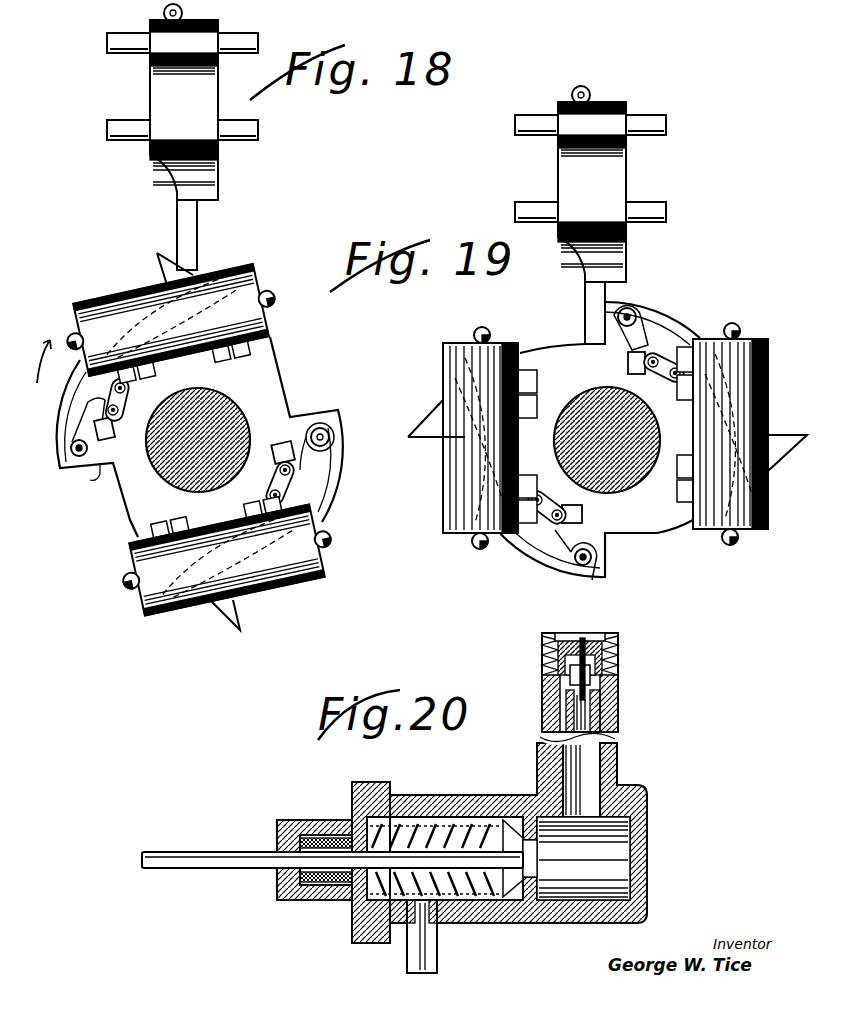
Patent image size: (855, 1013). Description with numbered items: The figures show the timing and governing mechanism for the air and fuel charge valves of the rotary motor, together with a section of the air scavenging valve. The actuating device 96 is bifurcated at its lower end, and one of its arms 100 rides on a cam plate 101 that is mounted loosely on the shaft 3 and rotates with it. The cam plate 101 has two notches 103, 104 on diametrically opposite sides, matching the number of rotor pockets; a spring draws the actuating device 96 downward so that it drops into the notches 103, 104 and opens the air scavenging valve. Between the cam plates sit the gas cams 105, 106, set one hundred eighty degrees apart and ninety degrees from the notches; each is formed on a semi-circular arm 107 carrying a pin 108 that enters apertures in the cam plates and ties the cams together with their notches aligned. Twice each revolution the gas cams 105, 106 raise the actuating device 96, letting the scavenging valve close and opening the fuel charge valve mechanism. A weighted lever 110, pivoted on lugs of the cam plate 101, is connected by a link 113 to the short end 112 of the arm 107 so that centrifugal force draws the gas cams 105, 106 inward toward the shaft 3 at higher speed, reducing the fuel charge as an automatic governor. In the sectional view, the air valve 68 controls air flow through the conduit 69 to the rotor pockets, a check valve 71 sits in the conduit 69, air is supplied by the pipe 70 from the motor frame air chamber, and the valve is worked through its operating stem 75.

In FIG. 18, the shaft 3 is at (157, 475).
In FIG. 19, the shaft 3 is at (614, 489).
In FIG. 20, the air valve 68 is at (487, 800).
In FIG. 20, the conduit 69 is at (590, 712).
In FIG. 20, the pipe 70 is at (407, 962).
In FIG. 20, the check valve 71 is at (583, 635).
In FIG. 20, the operating stem 75 is at (207, 869).
In FIG. 18, the actuating device 96 is at (182, 108).
In FIG. 19, the actuating device 96 is at (590, 190).
In FIG. 18, the arm 100 is at (198, 235).
In FIG. 19, the arm 100 is at (586, 308).
In FIG. 18, the cam plate 101 is at (270, 384).
In FIG. 19, the cam plate 101 is at (546, 548).
In FIG. 18, the notch 103 is at (325, 408).
In FIG. 19, the notch 103 is at (614, 538).
In FIG. 18, the notch 104 is at (88, 475).
In FIG. 19, the notch 104 is at (609, 305).
In FIG. 18, the gas cam 105 is at (157, 262).
In FIG. 19, the gas cam 105 is at (789, 434).
In FIG. 18, the gas cam 106 is at (243, 617).
In FIG. 19, the gas cam 106 is at (432, 415).
In FIG. 18, the semi-circular arm 107 is at (75, 411).
In FIG. 19, the semi-circular arm 107 is at (677, 330).
In FIG. 18, the pin 108 is at (73, 456).
In FIG. 19, the pin 108 is at (636, 312).
In FIG. 18, the weighted lever 110 is at (199, 440).
In FIG. 19, the weighted lever 110 is at (505, 362).
In FIG. 18, the short end 112 is at (101, 441).
In FIG. 19, the short end 112 is at (630, 342).
In FIG. 18, the link 113 is at (126, 396).
In FIG. 19, the link 113 is at (660, 372).